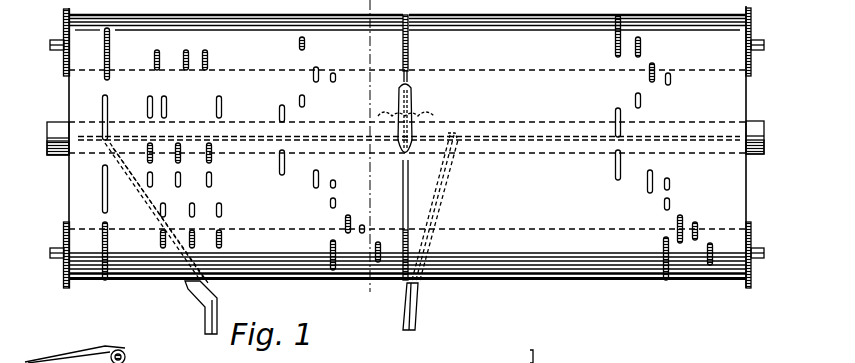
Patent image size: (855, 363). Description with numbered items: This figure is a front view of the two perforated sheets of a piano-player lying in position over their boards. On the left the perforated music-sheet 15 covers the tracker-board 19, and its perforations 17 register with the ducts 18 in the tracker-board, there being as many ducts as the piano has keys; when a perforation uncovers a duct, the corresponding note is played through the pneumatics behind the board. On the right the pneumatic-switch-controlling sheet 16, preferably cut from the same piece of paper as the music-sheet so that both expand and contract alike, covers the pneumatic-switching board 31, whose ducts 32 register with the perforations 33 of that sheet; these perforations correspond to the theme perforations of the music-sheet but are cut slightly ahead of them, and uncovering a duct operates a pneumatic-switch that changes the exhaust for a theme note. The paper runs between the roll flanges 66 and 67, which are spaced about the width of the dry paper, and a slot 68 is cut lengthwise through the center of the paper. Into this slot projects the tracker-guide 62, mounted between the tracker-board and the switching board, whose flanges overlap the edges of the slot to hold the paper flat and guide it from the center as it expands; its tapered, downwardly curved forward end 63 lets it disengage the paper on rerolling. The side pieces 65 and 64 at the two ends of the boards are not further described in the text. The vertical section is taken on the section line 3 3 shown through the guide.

The section line 3- 3 is at (325, 4).
The perforated music-sheet 15 is at (236, 41).
The pneumatic-switch-controlling sheet 16 is at (577, 40).
The perforations 17 is at (108, 108).
The ducts 18 is at (216, 307).
The tracker-board 19 is at (47, 141).
The pneumatic-switching board 31 is at (764, 130).
The ducts 32 is at (418, 306).
The perforations 33 is at (614, 38).
The tracker-guide 62 is at (408, 108).
The forward end 63 is at (402, 163).
The end wall 64 is at (748, 101).
The end wall 65 is at (69, 190).
The flange 66 is at (751, 38).
The flange 67 is at (64, 33).
The slot 68 is at (403, 197).